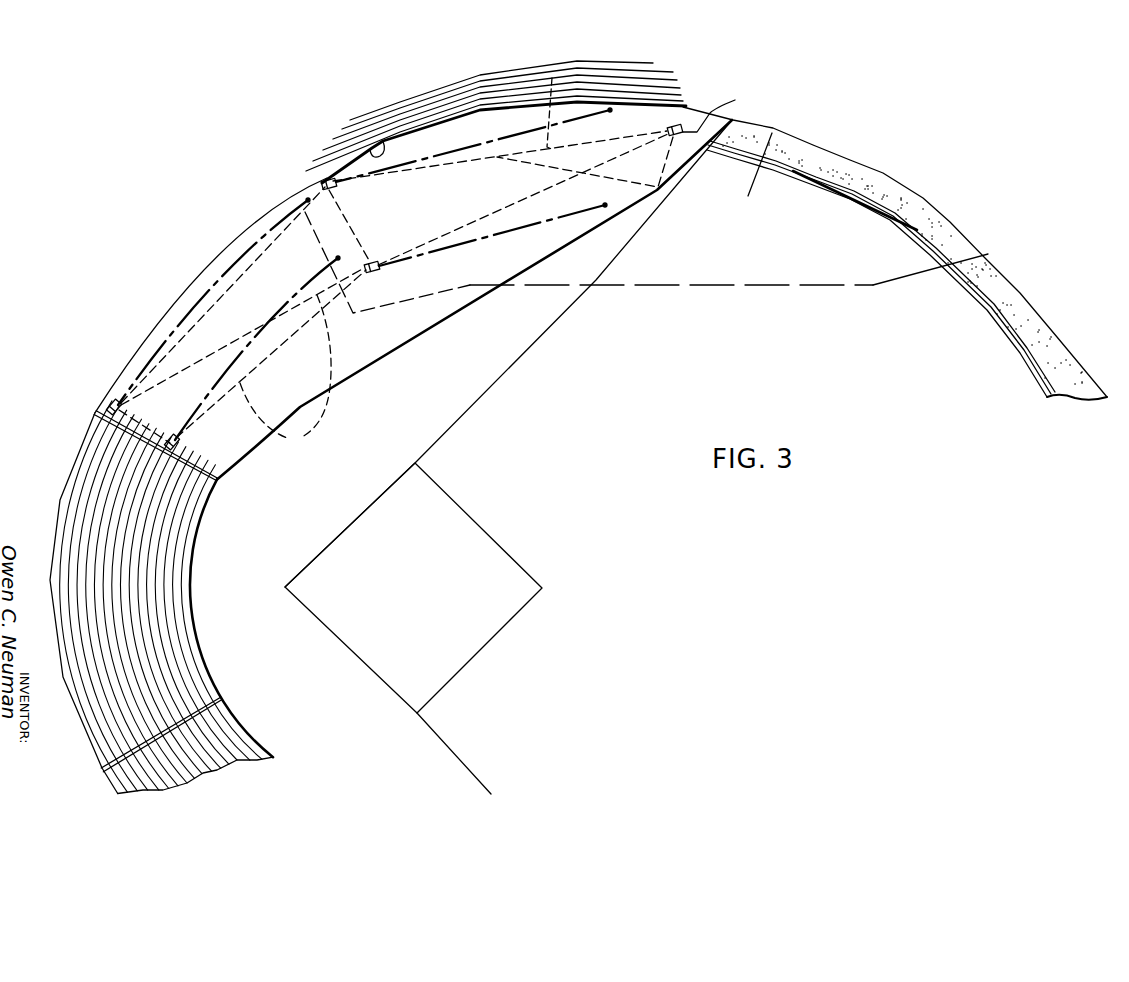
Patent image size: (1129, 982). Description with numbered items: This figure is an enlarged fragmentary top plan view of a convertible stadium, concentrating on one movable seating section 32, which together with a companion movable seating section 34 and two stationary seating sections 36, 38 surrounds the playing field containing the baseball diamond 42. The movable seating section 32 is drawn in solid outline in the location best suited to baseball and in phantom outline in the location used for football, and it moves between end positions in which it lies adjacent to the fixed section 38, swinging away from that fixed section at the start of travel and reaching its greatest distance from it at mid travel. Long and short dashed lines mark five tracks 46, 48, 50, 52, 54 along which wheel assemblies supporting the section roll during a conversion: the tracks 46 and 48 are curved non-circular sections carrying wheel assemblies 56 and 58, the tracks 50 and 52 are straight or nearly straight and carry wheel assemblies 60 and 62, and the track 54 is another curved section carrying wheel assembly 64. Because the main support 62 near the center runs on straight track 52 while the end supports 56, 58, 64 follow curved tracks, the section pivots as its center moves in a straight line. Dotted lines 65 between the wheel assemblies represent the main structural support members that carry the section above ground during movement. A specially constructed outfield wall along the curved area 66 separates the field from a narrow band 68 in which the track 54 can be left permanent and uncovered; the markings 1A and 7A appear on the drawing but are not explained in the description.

The movable seating section 32 is at (384, 358).
The movable seating section 34 is at (244, 723).
The stationary seating section 36 is at (195, 553).
The stationary seating section 38 is at (417, 107).
The baseball diamond 42 is at (334, 636).
The track 46 is at (210, 284).
The track 48 is at (244, 352).
The track 50 is at (457, 152).
The track 52 is at (461, 243).
The track 54 is at (720, 107).
The wheel assembly 56 is at (98, 407).
The wheel assembly 58 is at (180, 441).
The wheel assembly 60 is at (337, 186).
The wheel assembly 62 is at (376, 262).
The wheel assembly 64 is at (673, 122).
The main support members 65 is at (463, 252).
The curved area 66 is at (903, 236).
The narrow band 68 is at (1013, 288).
The section line 1A is at (771, 144).
The detail 7A is at (374, 151).